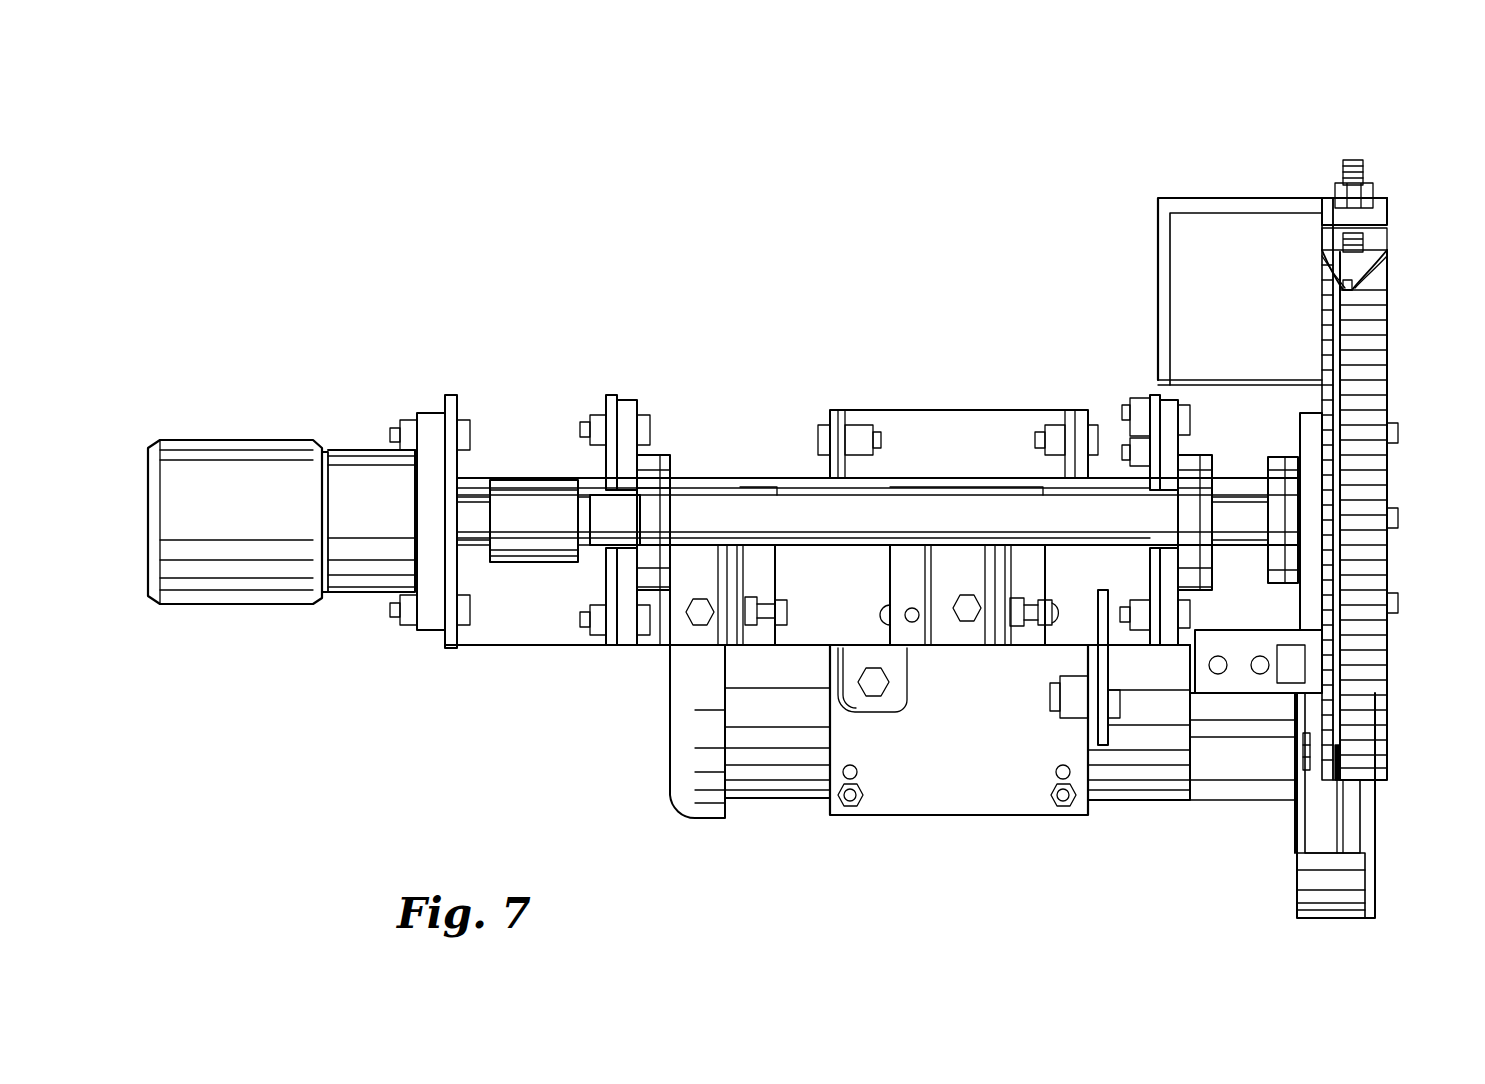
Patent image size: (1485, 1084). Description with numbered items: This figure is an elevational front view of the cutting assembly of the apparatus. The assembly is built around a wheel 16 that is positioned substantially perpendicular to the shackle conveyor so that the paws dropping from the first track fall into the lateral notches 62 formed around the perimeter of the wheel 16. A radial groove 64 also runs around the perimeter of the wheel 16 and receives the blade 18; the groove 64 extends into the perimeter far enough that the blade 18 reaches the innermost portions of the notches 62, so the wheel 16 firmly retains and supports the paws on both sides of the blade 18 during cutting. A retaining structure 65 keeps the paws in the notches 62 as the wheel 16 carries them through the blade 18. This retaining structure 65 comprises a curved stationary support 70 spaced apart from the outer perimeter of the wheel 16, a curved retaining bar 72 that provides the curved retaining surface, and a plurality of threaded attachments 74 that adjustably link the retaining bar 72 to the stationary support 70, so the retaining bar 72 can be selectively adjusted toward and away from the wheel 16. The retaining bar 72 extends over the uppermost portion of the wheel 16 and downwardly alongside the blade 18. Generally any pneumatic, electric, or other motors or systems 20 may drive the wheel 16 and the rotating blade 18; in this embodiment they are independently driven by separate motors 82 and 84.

The wheel 16 is at (1390, 343).
The blade 18 is at (1340, 822).
The motors or system 20 is at (783, 462).
The lateral notches 62 is at (1367, 389).
The radial groove 64 is at (1337, 483).
The retaining structure 65 is at (1325, 198).
The curved stationary support 70 is at (1382, 212).
The curved retaining bar 72 is at (1385, 263).
The threaded attachments 74 is at (1372, 190).
The motor 82 is at (268, 606).
The motor 84 is at (798, 790).